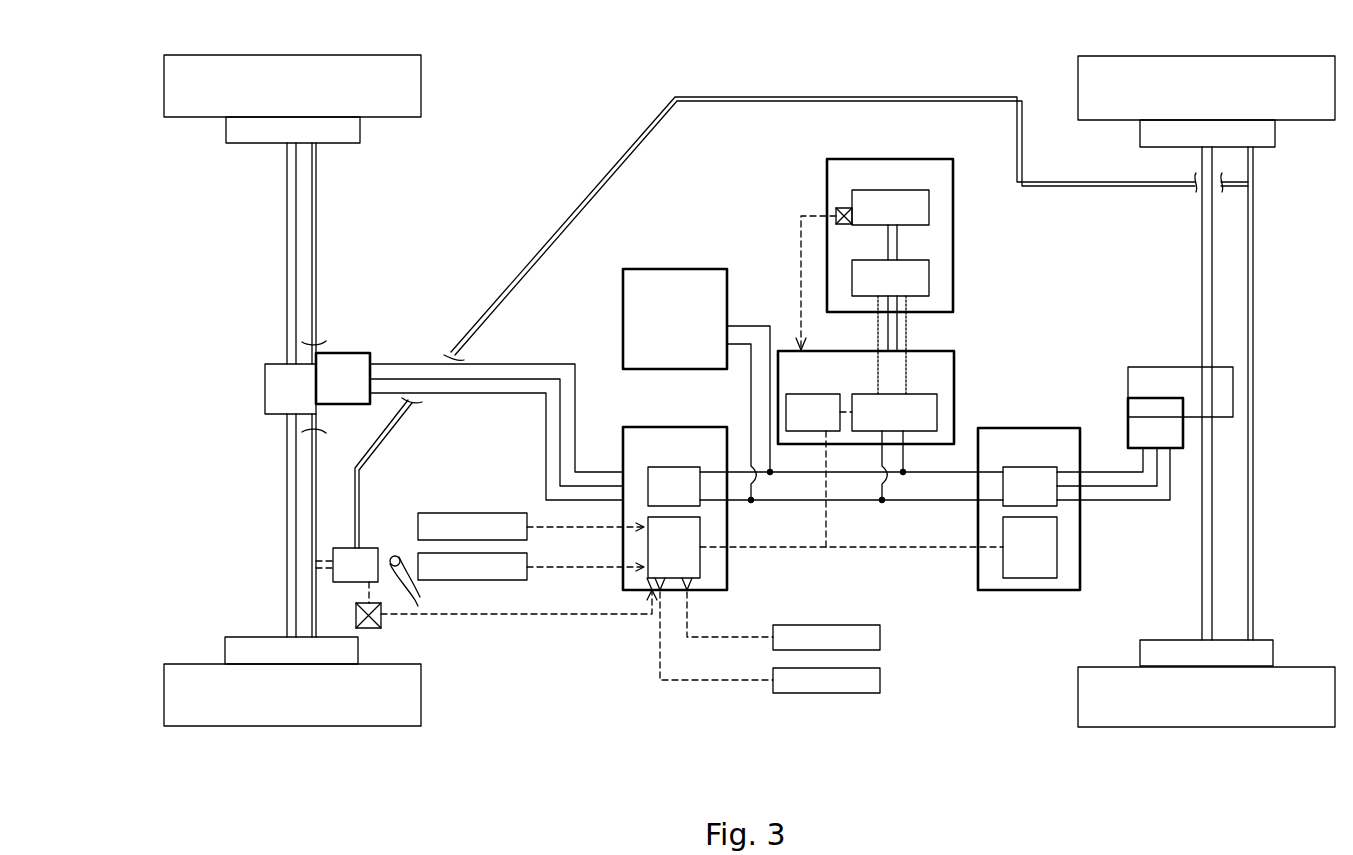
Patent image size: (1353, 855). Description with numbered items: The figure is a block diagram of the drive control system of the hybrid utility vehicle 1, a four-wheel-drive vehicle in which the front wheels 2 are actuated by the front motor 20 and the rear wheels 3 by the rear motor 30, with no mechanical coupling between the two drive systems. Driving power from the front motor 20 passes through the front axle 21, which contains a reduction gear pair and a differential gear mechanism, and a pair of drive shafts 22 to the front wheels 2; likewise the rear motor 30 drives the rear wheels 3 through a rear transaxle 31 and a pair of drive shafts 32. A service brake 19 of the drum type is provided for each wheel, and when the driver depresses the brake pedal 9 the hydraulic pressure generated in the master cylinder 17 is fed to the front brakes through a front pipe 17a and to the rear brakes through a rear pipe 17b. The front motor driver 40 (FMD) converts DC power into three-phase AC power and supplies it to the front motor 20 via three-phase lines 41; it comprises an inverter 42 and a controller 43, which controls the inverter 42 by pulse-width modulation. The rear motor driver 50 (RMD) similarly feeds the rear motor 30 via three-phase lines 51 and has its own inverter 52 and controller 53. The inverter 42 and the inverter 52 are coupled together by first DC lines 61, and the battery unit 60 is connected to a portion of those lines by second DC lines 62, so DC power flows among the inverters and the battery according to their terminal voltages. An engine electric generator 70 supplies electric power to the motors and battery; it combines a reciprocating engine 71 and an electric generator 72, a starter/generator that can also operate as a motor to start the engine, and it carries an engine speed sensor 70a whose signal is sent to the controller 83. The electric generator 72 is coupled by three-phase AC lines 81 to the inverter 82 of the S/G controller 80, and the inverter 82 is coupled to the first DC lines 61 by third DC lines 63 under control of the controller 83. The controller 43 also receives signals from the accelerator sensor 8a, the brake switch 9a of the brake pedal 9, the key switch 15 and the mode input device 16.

The utility vehicle 1 is at (603, 116).
The front wheels 2 is at (421, 85).
The rear wheels 3 is at (1078, 92).
The accelerator sensor 8a is at (470, 513).
The brake pedal 9 is at (422, 598).
The brake switch 9a is at (482, 580).
The key switch 15 is at (880, 637).
The mode input device 16 is at (880, 680).
The master cylinder 17 is at (365, 548).
The front pipe 17a is at (316, 222).
The rear pipe 17b is at (1253, 300).
The service brake 19 is at (360, 130).
The front motor 20 is at (343, 353).
The front axle 21 is at (265, 390).
The drive shafts 22 is at (287, 258).
The rear motor 30 is at (1128, 425).
The rear transaxle 31 is at (1168, 367).
The drive shafts 32 is at (1202, 245).
The front motor driver 40 is at (678, 427).
The three-phase lines 41 is at (530, 364).
The inverter 42 is at (695, 467).
The controller 43 is at (700, 535).
The rear motor driver 50 is at (1045, 428).
The three-phase lines 51 is at (1148, 500).
The inverter 52 is at (1057, 506).
The controller 53 is at (1057, 565).
The battery unit 60 is at (672, 269).
The first DC lines 61 is at (858, 500).
The second DC lines 62 is at (745, 326).
The third DC lines 63 is at (906, 455).
The engine electric generator 70 is at (890, 159).
The engine speed sensor 70a is at (840, 208).
The reciprocating engine 71 is at (929, 205).
The electric generator 72 is at (929, 275).
The S/G controller 80 is at (954, 360).
The AC lines 81 is at (913, 330).
The inverter 82 is at (937, 410).
The controller 83 is at (810, 431).